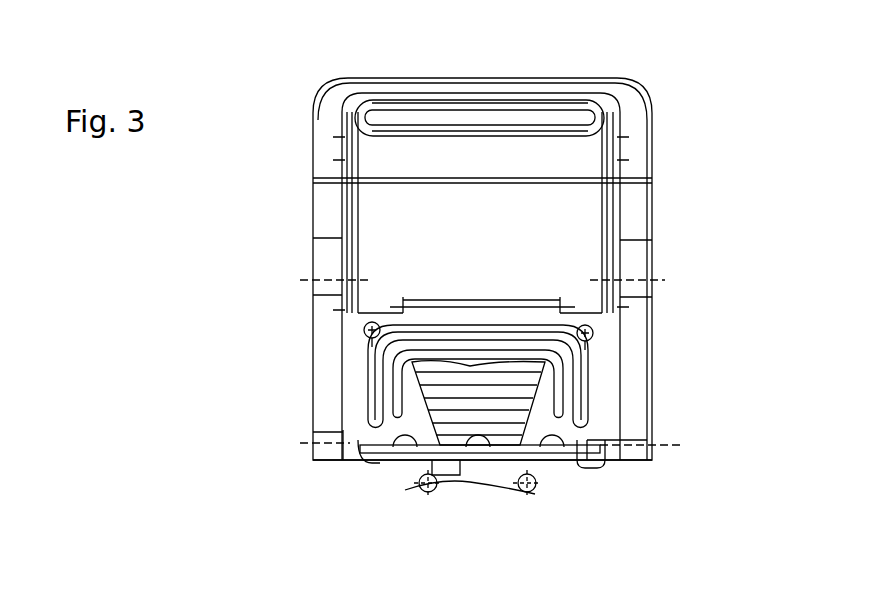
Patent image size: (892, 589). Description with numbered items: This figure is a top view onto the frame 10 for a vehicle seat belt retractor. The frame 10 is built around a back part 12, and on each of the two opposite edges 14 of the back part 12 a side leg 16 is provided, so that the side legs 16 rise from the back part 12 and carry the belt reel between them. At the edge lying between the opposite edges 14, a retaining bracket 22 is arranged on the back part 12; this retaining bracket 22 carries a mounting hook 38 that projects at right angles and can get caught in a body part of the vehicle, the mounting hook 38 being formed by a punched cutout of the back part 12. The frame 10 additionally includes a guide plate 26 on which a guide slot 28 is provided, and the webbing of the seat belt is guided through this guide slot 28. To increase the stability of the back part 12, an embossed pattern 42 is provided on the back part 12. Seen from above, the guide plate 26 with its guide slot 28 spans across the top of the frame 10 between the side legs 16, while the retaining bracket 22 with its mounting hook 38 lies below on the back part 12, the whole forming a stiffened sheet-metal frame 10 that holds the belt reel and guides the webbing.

The frame 10 is at (723, 57).
The back part 12 is at (598, 385).
The edges 14 is at (345, 375).
The side leg 16 is at (345, 265).
The retaining bracket 22 is at (568, 462).
The guide plate 26 is at (612, 92).
The guide slot 28 is at (535, 125).
The mounting hook 38 is at (463, 475).
The embossed pattern 42 is at (592, 415).